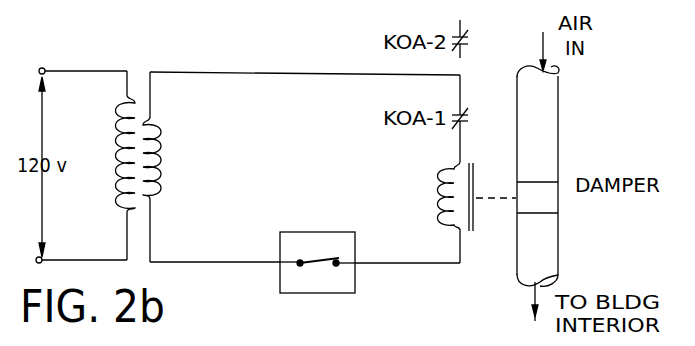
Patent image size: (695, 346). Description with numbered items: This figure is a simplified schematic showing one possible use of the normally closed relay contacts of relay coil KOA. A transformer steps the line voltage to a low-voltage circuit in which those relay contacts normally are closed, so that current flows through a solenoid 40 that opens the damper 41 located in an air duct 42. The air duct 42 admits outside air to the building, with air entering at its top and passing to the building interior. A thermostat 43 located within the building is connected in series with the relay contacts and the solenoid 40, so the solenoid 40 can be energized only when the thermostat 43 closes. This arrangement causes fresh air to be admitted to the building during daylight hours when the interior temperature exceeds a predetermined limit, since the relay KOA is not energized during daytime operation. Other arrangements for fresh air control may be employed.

The solenoid 40 is at (452, 207).
The damper 41 is at (558, 207).
The air duct 42 is at (559, 141).
The thermostat 43 is at (340, 262).